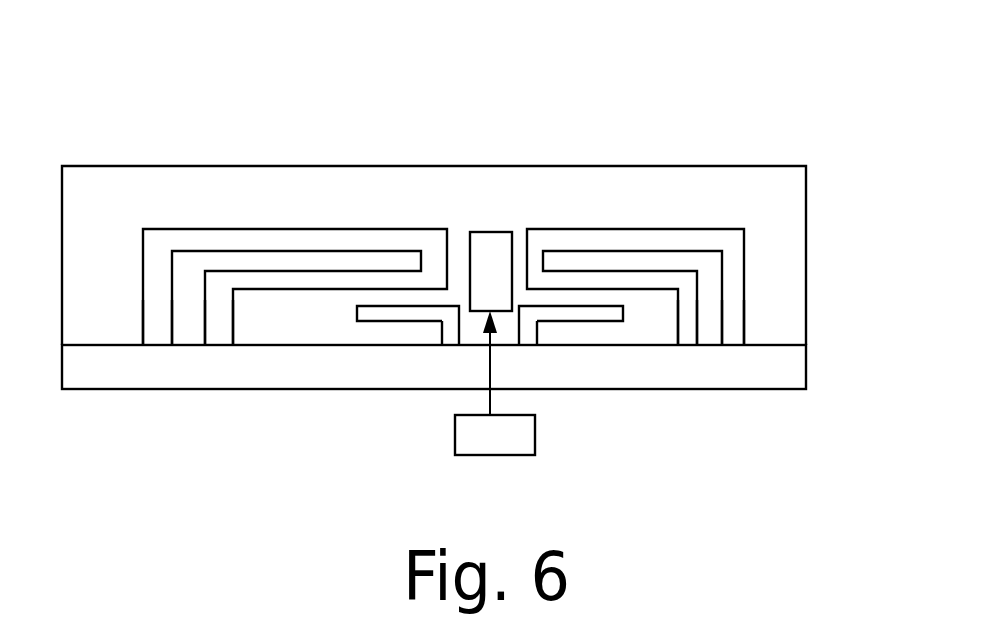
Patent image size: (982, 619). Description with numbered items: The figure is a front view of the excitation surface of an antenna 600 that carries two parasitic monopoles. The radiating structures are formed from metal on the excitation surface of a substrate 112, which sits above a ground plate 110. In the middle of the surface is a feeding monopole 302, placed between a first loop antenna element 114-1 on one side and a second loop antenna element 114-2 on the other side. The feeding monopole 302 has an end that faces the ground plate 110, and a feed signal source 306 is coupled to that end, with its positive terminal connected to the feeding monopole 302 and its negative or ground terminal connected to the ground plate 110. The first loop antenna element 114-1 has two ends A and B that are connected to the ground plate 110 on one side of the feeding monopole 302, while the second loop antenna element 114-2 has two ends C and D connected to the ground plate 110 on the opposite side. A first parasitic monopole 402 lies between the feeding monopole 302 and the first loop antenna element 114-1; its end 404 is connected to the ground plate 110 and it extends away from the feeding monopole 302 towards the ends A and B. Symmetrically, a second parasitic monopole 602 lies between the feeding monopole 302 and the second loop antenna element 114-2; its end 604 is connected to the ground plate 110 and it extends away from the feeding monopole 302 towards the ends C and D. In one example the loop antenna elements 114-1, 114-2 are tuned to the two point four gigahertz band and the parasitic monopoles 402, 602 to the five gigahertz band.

The antenna 600 is at (427, 58).
The substrate 112 is at (792, 166).
The ground plate 110 is at (770, 389).
The second loop antenna element 114-2 is at (303, 229).
The first loop antenna element 114-1 is at (720, 230).
The feeding monopole 302 is at (468, 247).
The feed signal source 306 is at (480, 455).
The second parasitic monopole 602 is at (380, 322).
The end of second parasitic monopole 604 is at (441, 333).
The first parasitic monopole 402 is at (588, 322).
The end of first parasitic monopole 404 is at (538, 335).
The end of first loop antenna element A is at (697, 318).
The end of first loop antenna element B is at (744, 325).
The end of second loop antenna element C is at (143, 325).
The end of second loop antenna element D is at (205, 325).